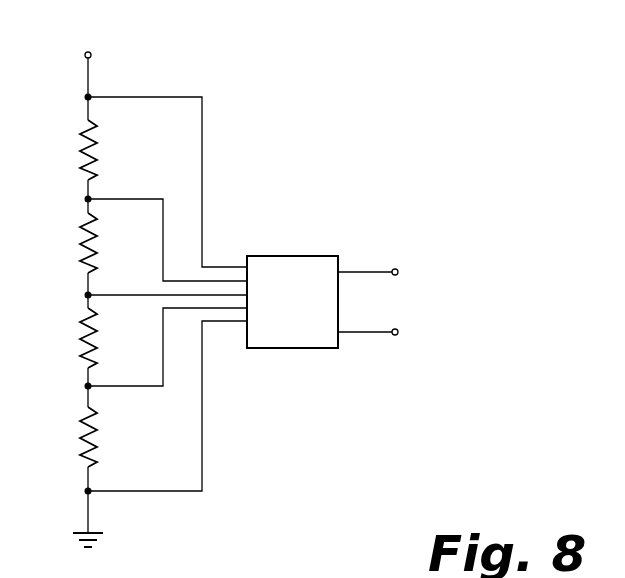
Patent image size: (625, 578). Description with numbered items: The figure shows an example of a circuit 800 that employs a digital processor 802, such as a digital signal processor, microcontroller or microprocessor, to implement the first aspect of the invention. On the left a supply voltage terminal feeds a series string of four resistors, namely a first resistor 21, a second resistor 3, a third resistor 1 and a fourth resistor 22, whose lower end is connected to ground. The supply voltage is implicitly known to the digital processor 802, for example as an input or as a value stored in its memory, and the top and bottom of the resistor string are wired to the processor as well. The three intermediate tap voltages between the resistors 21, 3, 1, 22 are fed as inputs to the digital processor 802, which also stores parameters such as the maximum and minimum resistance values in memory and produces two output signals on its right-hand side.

The circuit 800 is at (359, 200).
The digital processor 802 is at (317, 348).
The resistor R21 21 is at (110, 150).
The resistor R3 3 is at (105, 243).
The resistor R1 1 is at (105, 338).
The resistor R22 22 is at (110, 437).